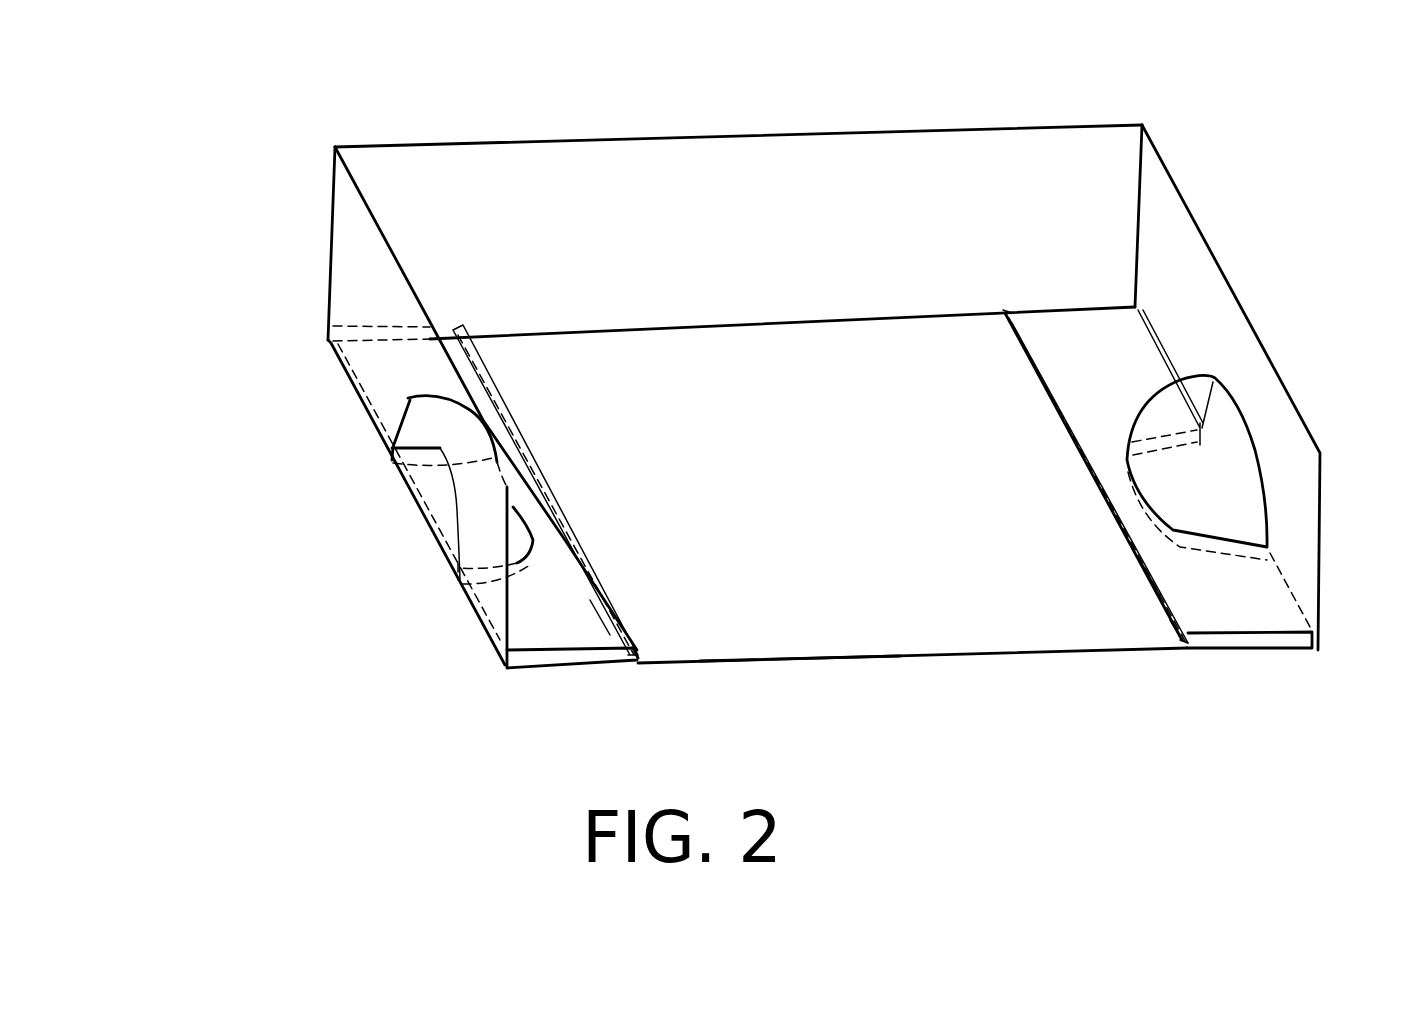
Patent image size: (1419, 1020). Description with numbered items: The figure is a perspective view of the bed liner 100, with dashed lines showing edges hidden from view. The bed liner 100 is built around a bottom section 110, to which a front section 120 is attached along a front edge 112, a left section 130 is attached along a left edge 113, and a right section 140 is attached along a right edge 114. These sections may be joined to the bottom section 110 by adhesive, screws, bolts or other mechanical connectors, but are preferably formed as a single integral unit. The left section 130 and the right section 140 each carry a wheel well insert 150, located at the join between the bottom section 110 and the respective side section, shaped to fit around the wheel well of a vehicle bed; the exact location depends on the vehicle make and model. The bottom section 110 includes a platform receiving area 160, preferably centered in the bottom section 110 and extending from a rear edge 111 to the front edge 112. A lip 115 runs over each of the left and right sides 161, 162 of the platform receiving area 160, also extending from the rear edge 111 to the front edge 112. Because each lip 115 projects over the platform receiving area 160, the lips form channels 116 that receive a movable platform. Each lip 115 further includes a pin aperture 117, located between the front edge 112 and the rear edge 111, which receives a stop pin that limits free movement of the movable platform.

The bed liner 100 is at (1178, 188).
The bottom section 110 is at (633, 668).
The rear edge 111 is at (790, 667).
The front edge 112 is at (735, 328).
The left edge 113 is at (358, 405).
The right edge 114 is at (1163, 353).
The lip 115 is at (625, 662).
The channel 116 is at (1180, 652).
The pin aperture 117 is at (600, 578).
The front section 120 is at (515, 245).
The left section 130 is at (408, 372).
The right section 140 is at (1160, 285).
The wheel well insert 150 is at (477, 515).
The platform receiving area 160 is at (865, 555).
The left side of platform receiving area 161 is at (600, 615).
The right side of platform receiving area 162 is at (1157, 580).